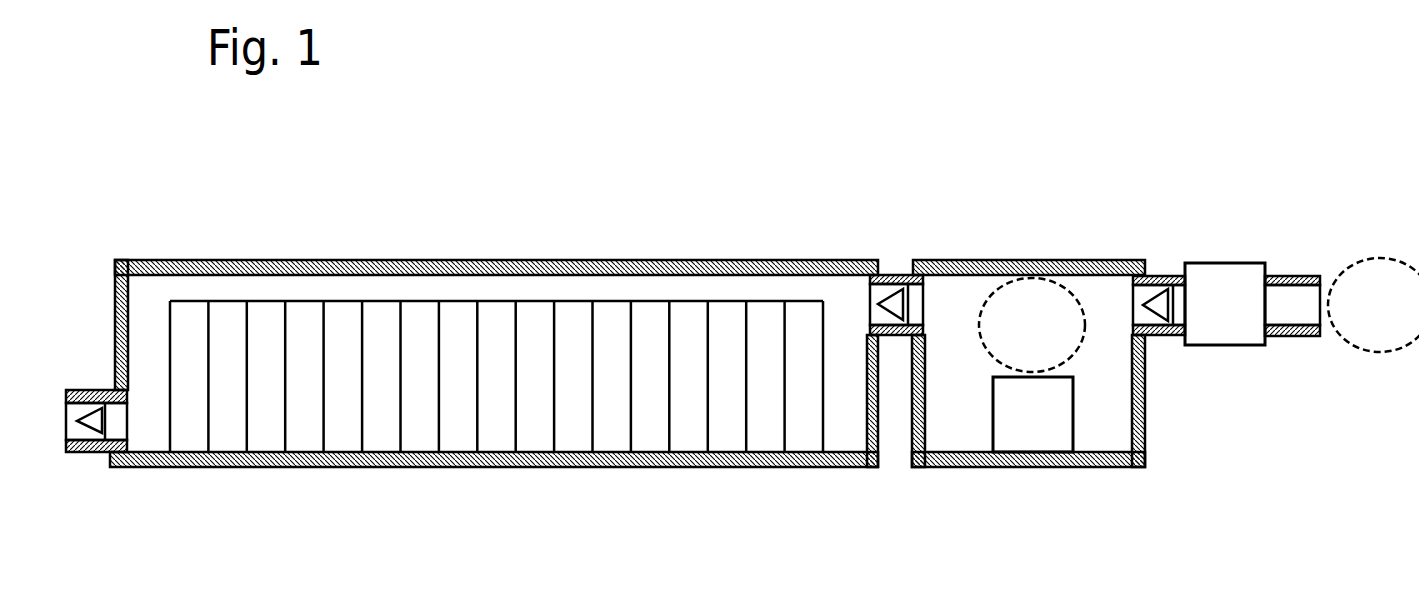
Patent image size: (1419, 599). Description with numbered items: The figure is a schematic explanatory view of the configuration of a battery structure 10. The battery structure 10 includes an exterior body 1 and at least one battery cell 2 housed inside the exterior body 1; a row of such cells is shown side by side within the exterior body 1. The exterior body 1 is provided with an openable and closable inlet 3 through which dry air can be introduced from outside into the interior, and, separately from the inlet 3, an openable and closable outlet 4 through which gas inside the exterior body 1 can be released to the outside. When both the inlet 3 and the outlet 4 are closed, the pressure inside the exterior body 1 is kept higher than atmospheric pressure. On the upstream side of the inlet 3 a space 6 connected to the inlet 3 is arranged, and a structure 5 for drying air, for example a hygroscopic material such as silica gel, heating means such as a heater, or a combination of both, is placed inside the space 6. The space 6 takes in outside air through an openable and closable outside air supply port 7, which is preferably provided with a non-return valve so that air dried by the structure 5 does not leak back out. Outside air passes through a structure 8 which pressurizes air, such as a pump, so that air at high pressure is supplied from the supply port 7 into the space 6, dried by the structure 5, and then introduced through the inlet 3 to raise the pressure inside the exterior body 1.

The battery structure 10 is at (509, 162).
The exterior body 1 is at (767, 260).
The battery cell 2 is at (764, 435).
The inlet 3 is at (893, 272).
The outlet 4 is at (88, 455).
The structure for drying air 5 is at (1030, 435).
The space 6 is at (1104, 435).
The outside air supply port 7 is at (1170, 337).
The structure which pressurizes air 8 is at (1227, 335).